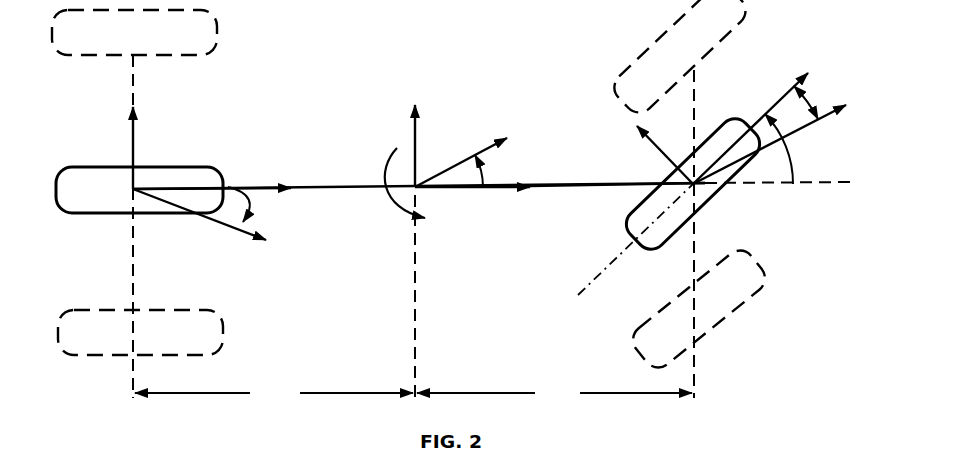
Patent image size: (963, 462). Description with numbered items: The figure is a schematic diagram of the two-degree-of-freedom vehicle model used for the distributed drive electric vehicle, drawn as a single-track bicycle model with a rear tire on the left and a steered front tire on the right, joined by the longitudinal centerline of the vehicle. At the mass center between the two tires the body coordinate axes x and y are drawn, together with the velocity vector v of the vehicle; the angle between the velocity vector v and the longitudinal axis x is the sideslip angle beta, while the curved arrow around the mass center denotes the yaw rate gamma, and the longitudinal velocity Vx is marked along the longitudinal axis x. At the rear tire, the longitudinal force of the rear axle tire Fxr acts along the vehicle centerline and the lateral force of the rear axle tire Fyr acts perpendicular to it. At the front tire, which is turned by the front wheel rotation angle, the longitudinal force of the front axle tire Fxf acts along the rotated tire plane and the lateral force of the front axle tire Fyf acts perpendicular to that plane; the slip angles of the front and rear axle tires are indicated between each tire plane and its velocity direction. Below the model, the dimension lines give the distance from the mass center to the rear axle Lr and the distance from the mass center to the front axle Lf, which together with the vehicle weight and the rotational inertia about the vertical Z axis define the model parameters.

The lateral force of rear axle tire Fyr is at (156, 145).
The longitudinal force of rear axle tire Fxr is at (212, 170).
The vehicle lateral axis y is at (393, 139).
The vehicle longitudinal axis x is at (472, 206).
The vehicle velocity vector v is at (461, 145).
The sideslip angle beta is at (495, 169).
The yaw rate gamma is at (394, 183).
The longitudinal velocity Vx is at (617, 175).
The longitudinal force of front axle tire Fxf is at (750, 114).
The lateral force of front axle tire Fyf is at (636, 150).
The distance from mass center to rear axle Lr is at (274, 397).
The distance from mass center to front axle Lf is at (554, 397).